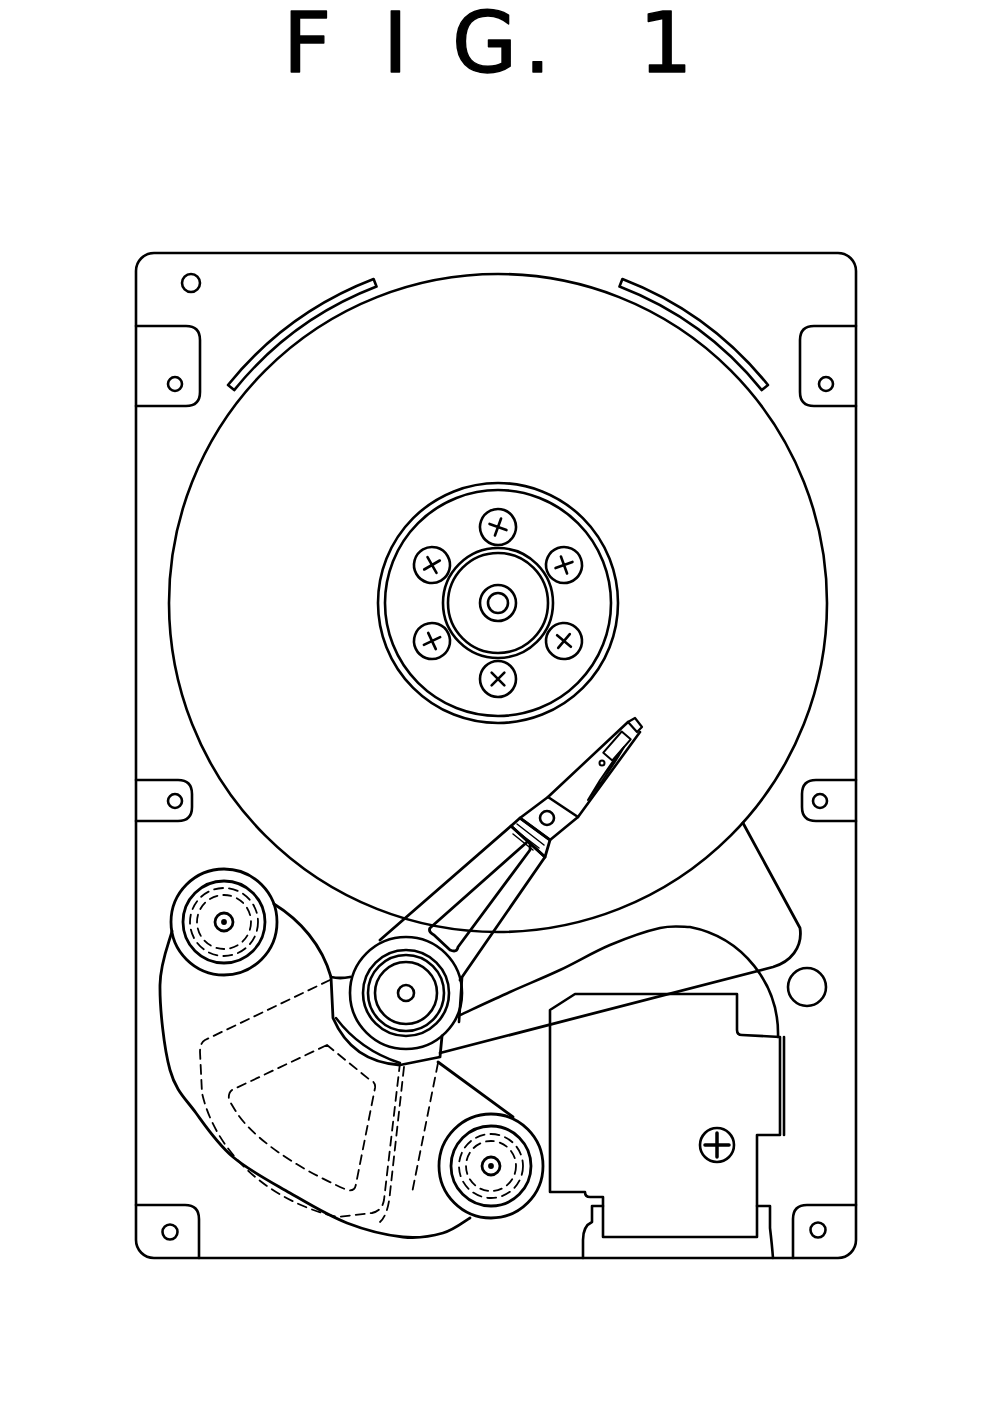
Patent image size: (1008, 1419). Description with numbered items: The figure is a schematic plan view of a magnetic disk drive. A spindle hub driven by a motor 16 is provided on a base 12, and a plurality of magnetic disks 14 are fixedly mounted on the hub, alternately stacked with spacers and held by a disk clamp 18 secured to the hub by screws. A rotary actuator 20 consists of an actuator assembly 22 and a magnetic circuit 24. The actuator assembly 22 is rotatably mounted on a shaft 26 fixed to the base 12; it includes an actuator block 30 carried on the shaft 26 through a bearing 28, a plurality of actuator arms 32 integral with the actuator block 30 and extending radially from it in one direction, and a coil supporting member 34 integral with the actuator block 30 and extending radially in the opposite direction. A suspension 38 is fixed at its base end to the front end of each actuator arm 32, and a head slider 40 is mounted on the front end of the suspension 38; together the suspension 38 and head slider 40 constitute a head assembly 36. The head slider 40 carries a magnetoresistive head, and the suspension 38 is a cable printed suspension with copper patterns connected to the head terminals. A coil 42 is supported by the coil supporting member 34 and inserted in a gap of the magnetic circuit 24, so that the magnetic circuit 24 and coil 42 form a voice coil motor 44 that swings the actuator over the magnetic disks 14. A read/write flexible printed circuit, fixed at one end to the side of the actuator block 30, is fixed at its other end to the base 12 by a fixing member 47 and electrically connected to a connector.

The base 12 is at (733, 278).
The magnetic disks 14 is at (478, 308).
The motor 16 is at (477, 575).
The disk clamp 18 is at (548, 525).
The rotary actuator 20 is at (400, 900).
The actuator assembly 22 is at (463, 867).
The magnetic circuit 24 is at (198, 995).
The shaft 26 is at (402, 997).
The bearing 28 is at (387, 978).
The actuator block 30 is at (460, 1007).
The actuator arms 32 is at (493, 850).
The coil supporting member 34 is at (402, 1195).
The head assembly 36 is at (630, 763).
The suspension 38 is at (580, 795).
The head slider 40 is at (641, 716).
The coil 42 is at (303, 1187).
The voice coil motor 44 is at (203, 1145).
The fixing member 47 is at (785, 1103).